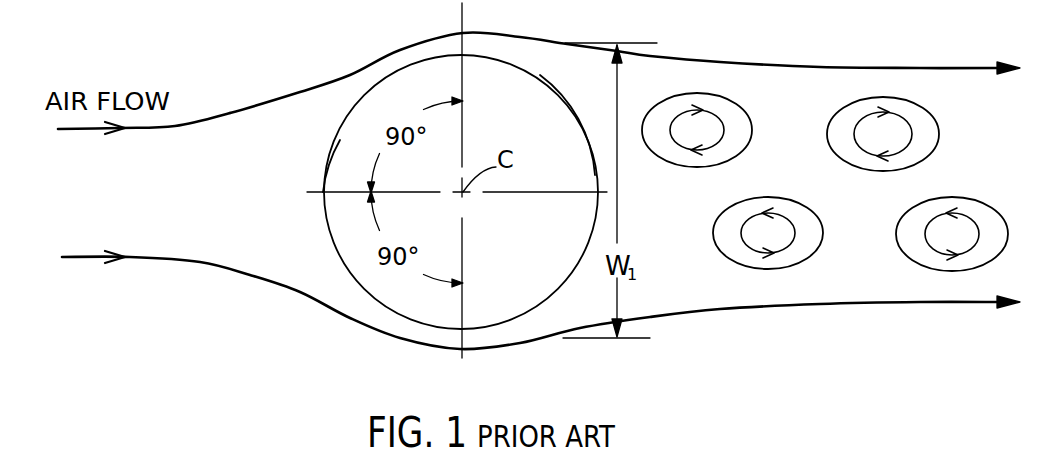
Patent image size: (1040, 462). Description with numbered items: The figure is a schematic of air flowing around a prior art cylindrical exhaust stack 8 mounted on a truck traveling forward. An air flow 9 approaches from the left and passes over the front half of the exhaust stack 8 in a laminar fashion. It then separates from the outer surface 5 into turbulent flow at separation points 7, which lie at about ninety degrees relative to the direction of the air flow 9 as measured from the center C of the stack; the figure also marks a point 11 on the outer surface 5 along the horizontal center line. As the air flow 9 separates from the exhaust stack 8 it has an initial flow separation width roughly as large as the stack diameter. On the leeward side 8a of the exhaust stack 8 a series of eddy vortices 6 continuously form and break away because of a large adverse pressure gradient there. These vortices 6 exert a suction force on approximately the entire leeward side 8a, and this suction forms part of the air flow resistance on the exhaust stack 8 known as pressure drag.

The outer surface 5 is at (333, 243).
The eddy vortices 6 is at (748, 112).
The separation points 7 is at (463, 55).
The cylindrical exhaust stack 8 is at (383, 103).
The leeward side 8a is at (578, 118).
The air flow 9 is at (176, 128).
The stagnation point of cylinder 11 is at (325, 192).